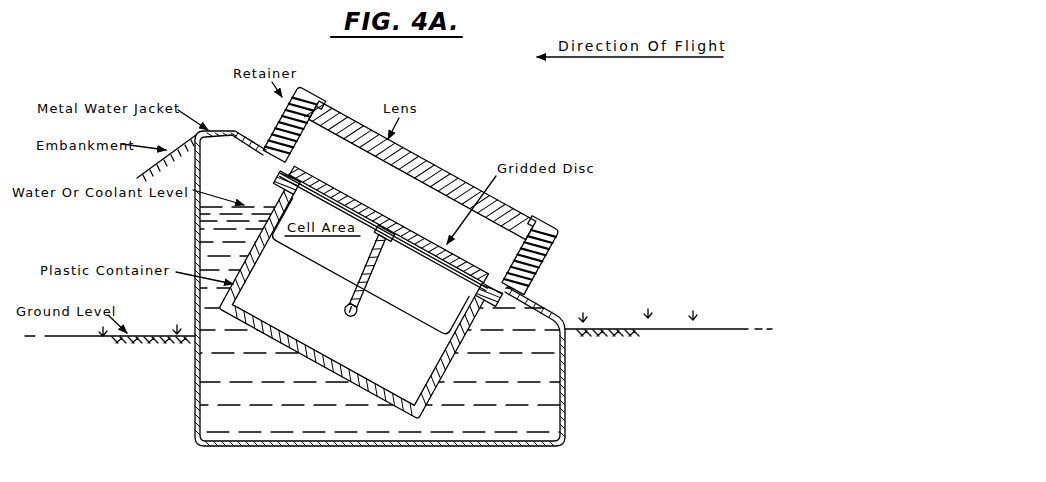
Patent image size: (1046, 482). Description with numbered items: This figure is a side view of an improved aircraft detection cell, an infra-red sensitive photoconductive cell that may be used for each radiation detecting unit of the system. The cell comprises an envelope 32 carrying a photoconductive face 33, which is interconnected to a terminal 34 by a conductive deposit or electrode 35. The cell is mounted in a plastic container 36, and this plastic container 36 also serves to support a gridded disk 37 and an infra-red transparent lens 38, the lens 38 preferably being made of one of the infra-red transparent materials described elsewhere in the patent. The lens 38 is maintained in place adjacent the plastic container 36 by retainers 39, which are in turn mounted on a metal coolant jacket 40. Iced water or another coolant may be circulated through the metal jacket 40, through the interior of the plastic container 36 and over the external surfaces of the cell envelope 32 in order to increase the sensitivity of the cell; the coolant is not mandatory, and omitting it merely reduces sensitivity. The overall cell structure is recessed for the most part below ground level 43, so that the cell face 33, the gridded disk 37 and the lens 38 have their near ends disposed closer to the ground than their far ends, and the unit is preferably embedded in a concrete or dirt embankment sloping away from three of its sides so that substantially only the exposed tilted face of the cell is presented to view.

The envelope 32 is at (463, 305).
The photoconductive face 33 is at (430, 247).
The terminal 34 is at (358, 308).
The conductive deposit 35 is at (374, 259).
The plastic container 36 is at (437, 377).
The gridded disk 37 is at (376, 201).
The infra-red transparent lens 38 is at (452, 166).
The retainer 39 is at (281, 120).
The metal coolant jacket 40 is at (197, 256).
The ground level 43 is at (172, 336).